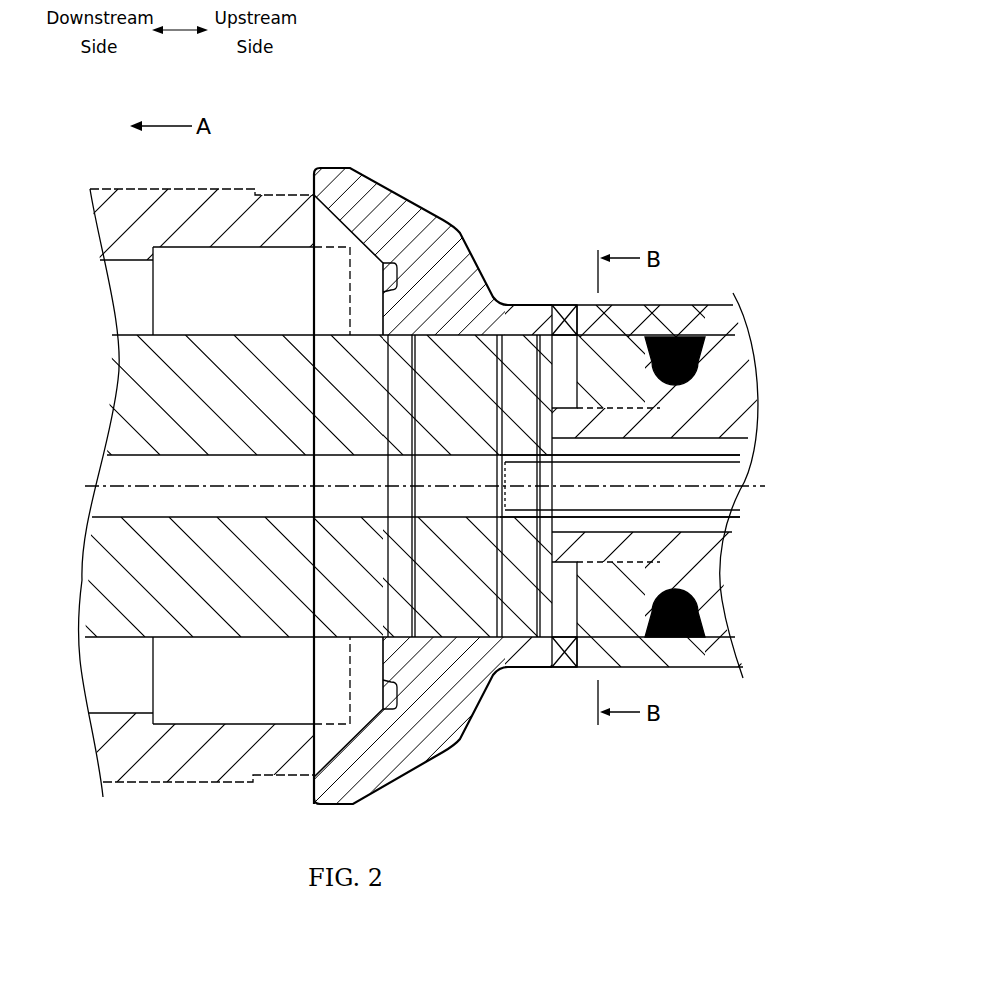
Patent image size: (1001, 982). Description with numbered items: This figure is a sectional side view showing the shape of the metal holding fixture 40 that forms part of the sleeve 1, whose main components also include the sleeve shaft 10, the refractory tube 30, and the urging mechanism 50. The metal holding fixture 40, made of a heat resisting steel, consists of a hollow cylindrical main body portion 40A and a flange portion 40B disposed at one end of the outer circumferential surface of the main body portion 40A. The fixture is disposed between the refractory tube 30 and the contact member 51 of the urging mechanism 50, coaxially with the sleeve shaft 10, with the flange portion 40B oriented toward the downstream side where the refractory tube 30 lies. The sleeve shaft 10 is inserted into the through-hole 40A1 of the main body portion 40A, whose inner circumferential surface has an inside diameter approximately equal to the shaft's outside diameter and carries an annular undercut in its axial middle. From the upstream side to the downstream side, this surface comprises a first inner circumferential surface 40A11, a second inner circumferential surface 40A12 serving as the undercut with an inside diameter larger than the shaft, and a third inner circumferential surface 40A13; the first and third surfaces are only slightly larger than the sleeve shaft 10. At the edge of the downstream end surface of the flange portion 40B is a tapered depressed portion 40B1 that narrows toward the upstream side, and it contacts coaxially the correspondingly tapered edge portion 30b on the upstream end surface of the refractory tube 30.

The sleeve 1 is at (636, 110).
The sleeve shaft 10 is at (216, 335).
The refractory tube 30 is at (247, 189).
The edge portion 30b is at (368, 797).
The metal holding fixture 40 is at (553, 177).
The main body portion 40A is at (518, 305).
The through-hole 40A1 is at (603, 728).
The first inner circumferential surface 40A11 is at (533, 640).
The second inner circumferential surface 40A12 is at (495, 663).
The third inner circumferential surface 40A13 is at (437, 663).
The flange portion 40B is at (462, 206).
The depressed portion 40B1 is at (358, 240).
The urging mechanism 50 is at (732, 305).
The contact member 51 is at (652, 441).